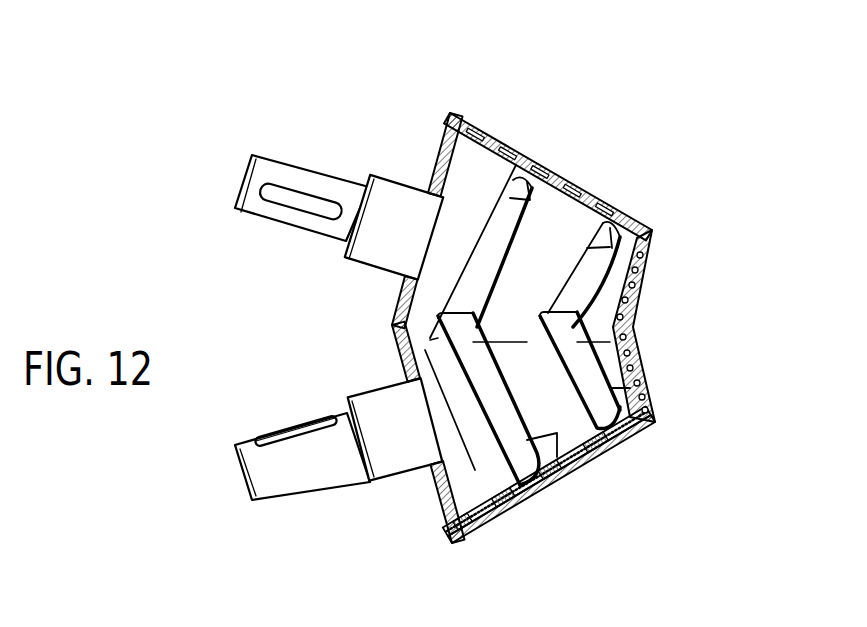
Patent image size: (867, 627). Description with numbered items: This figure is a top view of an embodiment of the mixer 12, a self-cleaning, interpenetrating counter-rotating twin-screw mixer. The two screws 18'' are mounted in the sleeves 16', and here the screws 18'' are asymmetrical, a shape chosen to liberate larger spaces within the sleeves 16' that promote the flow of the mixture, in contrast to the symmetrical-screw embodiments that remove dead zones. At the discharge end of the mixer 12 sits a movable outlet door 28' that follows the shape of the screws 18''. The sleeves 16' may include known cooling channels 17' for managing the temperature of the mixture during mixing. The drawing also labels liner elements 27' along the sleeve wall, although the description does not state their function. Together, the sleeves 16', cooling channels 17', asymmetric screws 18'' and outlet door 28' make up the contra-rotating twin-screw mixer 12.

The mixer 12 is at (245, 150).
The sleeves 16' is at (523, 301).
The cooling channels 17' is at (549, 118).
The screws 18'' is at (543, 363).
The liner inserts 27' is at (547, 493).
The movable outlet door 28' is at (691, 326).